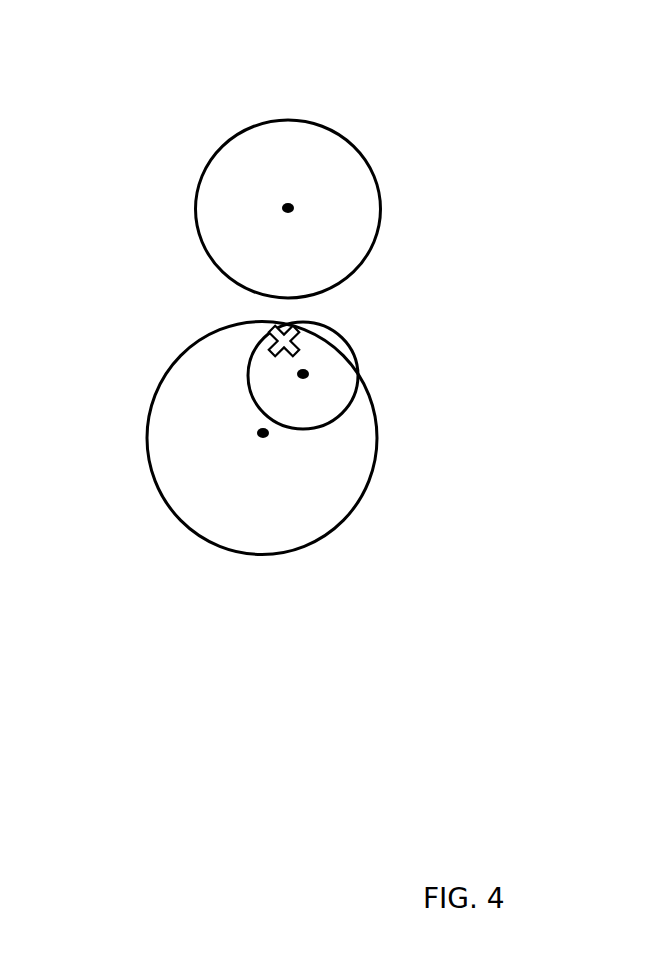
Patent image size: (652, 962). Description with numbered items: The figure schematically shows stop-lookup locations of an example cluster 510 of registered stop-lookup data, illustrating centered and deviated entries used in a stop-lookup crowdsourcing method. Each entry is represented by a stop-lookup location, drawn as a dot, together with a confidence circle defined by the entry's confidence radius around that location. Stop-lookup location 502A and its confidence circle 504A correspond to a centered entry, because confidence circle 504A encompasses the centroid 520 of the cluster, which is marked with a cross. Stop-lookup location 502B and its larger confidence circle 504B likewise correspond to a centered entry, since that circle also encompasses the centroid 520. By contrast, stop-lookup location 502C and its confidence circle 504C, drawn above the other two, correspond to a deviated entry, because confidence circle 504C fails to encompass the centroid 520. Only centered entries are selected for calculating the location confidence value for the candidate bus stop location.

The stop-lookup location 502A is at (308, 371).
The stop-lookup location 502B is at (263, 440).
The stop-lookup location 502C is at (291, 205).
The confidence circle 504A is at (340, 332).
The confidence circle 504B is at (376, 478).
The confidence circle 504C is at (313, 128).
The cluster 510 is at (533, 457).
The centroid 520 is at (270, 340).